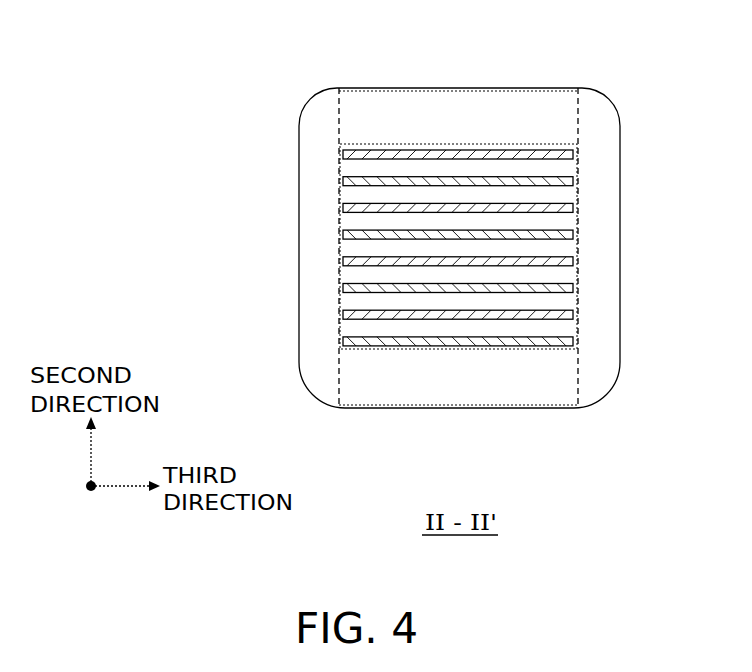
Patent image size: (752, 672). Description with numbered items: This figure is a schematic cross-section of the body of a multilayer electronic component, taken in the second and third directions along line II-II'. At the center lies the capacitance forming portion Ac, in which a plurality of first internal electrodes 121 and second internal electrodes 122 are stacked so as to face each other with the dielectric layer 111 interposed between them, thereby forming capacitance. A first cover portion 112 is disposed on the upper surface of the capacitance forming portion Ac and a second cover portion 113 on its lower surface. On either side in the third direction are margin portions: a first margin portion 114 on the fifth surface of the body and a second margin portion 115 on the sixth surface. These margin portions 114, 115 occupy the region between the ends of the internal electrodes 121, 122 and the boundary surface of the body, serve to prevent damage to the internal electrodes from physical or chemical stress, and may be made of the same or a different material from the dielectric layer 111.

The dielectric layer 111 is at (383, 167).
The first cover portion 112 is at (423, 107).
The second cover portion 113 is at (423, 388).
The first margin portion 114 is at (313, 336).
The second margin portion 115 is at (605, 250).
The first internal electrode 121 is at (492, 155).
The second internal electrode 122 is at (538, 233).
The capacitance forming portion AC is at (600, 333).